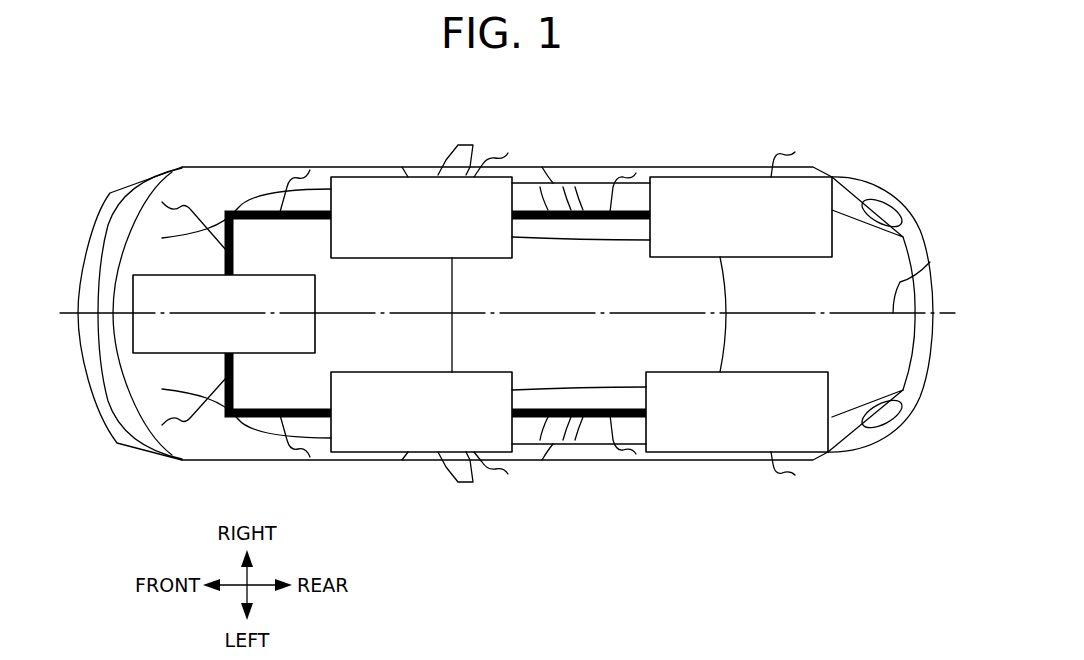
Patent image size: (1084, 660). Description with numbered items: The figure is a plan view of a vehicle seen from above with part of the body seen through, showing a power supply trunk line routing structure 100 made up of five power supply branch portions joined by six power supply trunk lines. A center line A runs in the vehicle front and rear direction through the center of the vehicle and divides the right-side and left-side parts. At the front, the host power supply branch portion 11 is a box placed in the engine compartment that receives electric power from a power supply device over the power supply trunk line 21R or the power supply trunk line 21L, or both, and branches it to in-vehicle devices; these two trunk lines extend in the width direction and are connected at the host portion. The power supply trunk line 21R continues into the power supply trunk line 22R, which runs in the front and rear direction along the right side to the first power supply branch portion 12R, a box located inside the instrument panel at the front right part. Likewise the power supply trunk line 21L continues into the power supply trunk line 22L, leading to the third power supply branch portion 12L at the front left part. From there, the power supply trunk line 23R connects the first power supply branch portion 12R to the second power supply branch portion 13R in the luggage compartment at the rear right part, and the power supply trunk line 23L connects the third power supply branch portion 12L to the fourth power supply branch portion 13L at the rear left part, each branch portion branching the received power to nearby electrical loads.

The power supply trunk line routing structure 100 is at (883, 142).
The host power supply branch portion 11 is at (190, 275).
The power supply trunk line 21R is at (162, 202).
The power supply trunk line 21L is at (162, 425).
The power supply trunk line 22R is at (310, 170).
The power supply trunk line 22L is at (310, 457).
The first power supply branch portion 12R is at (508, 153).
The third power supply branch portion 12L is at (508, 474).
The power supply trunk line 23R is at (636, 173).
The power supply trunk line 23L is at (636, 454).
The second power supply branch portion 13R is at (795, 152).
The fourth power supply branch portion 13L is at (795, 475).
The center line A is at (930, 262).